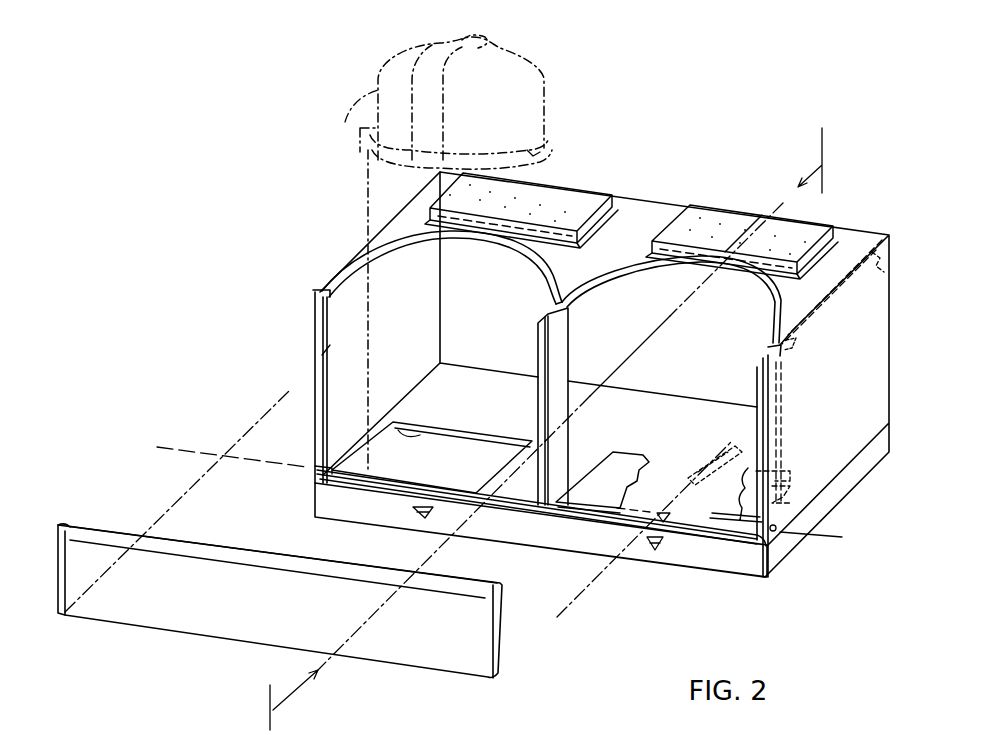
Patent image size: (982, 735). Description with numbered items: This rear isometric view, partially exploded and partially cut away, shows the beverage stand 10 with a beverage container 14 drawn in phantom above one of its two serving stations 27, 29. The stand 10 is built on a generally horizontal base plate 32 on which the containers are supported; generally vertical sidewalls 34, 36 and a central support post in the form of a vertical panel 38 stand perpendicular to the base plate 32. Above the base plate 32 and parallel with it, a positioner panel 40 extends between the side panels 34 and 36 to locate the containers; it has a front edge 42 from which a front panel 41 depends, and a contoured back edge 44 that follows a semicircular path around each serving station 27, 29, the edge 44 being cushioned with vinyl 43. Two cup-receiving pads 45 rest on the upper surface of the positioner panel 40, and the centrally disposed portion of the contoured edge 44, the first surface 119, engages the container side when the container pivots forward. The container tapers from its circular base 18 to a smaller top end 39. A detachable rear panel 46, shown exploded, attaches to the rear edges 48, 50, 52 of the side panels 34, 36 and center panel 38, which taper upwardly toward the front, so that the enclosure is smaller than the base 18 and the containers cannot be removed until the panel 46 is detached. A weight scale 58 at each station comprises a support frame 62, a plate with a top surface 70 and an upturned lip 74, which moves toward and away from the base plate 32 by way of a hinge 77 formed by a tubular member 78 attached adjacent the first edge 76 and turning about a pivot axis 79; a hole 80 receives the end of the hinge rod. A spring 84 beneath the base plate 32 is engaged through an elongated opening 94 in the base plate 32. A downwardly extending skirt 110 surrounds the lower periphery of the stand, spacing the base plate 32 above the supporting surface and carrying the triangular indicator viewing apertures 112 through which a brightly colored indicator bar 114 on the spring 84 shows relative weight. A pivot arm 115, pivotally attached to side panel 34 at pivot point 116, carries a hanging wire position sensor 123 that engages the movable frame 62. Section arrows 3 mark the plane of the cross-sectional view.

The beverage stand 10 is at (281, 305).
The beverage container 14 is at (347, 116).
The circular base 18 is at (440, 428).
The serving station 27 is at (791, 43).
The serving station 29 is at (557, 43).
The base plate 32 is at (605, 421).
The sidewall 34 is at (861, 403).
The sidewall 36 is at (316, 322).
The central support post 38 is at (567, 338).
The top end 39 is at (547, 158).
The positioner panel 40 is at (588, 273).
The front panel 41 is at (635, 214).
The front edge 42 is at (863, 231).
The vinyl 43 is at (388, 258).
The contoured back edge 44 is at (318, 296).
The cup-receiving pads 45 is at (583, 200).
The detachable rear panel 46 is at (177, 615).
The rear edge 48 is at (756, 396).
The rear edge 50 is at (318, 388).
The rear edge 52 is at (546, 364).
The weight scale 58 is at (508, 420).
The beverage dispenser support frame 62 is at (467, 446).
The top surface 70 is at (416, 468).
The upturned lip 74 is at (410, 422).
The first edge 76 is at (557, 517).
The hinge 77 is at (328, 487).
The tubular member 78 is at (335, 470).
The pivot axis 79 is at (242, 466).
The hole 80 is at (777, 530).
The spring 84 is at (663, 513).
The opening 94 is at (697, 480).
The skirt 110 is at (797, 533).
The indicator viewing aperture 112 is at (415, 512).
The indicator bar 114 is at (425, 520).
The pivot arm 115 is at (838, 285).
The pivot point 116 is at (803, 351).
The first surface 119 is at (733, 277).
The position sensor 123 is at (783, 437).
The section line 3- 3 is at (549, 414).